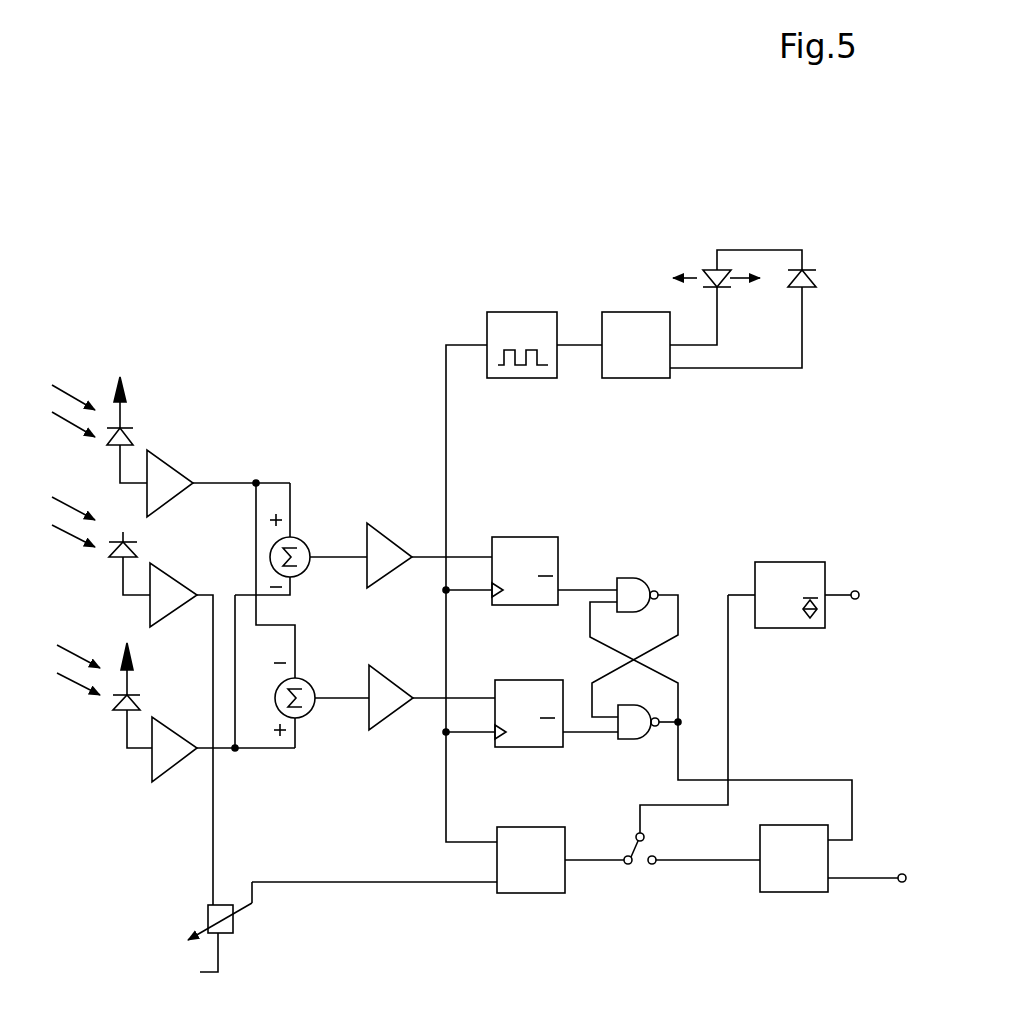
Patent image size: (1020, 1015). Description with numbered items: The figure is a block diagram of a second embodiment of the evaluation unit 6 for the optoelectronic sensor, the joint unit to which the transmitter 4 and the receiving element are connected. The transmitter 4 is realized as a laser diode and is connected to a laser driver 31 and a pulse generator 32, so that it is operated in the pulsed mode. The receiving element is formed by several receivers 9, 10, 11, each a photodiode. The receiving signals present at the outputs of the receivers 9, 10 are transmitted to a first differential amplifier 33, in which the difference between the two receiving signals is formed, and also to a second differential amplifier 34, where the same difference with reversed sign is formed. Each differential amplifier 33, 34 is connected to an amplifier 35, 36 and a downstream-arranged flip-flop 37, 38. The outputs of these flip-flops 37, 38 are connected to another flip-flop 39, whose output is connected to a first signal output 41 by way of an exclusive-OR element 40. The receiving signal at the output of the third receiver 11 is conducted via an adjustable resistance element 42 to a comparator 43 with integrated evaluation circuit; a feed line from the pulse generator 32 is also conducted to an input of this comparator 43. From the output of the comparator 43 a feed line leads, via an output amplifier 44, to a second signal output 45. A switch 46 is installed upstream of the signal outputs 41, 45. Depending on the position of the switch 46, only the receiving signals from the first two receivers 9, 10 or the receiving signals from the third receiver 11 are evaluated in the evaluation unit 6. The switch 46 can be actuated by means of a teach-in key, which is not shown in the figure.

The transmitter 4 is at (772, 248).
The evaluation unit 6 is at (333, 240).
The receiver 9 is at (135, 432).
The receiver 10 is at (118, 717).
The receiver 11 is at (130, 552).
The laser driver 31 is at (633, 365).
The pulse generator 32 is at (525, 373).
The first differential amplifier 33 is at (298, 542).
The second differential amplifier 34 is at (302, 712).
The amplifier 35 is at (385, 548).
The amplifier 36 is at (392, 702).
The flip-flop 37 is at (537, 548).
The flip-flop 38 is at (528, 737).
The flip-flop 39 is at (650, 580).
The exclusive-OR element 40 is at (812, 878).
The first signal output 41 is at (900, 892).
The adjustable resistance element 42 is at (245, 913).
The comparator 43 is at (515, 878).
The output amplifier 44 is at (810, 575).
The second signal output 45 is at (858, 600).
The switch 46 is at (638, 857).